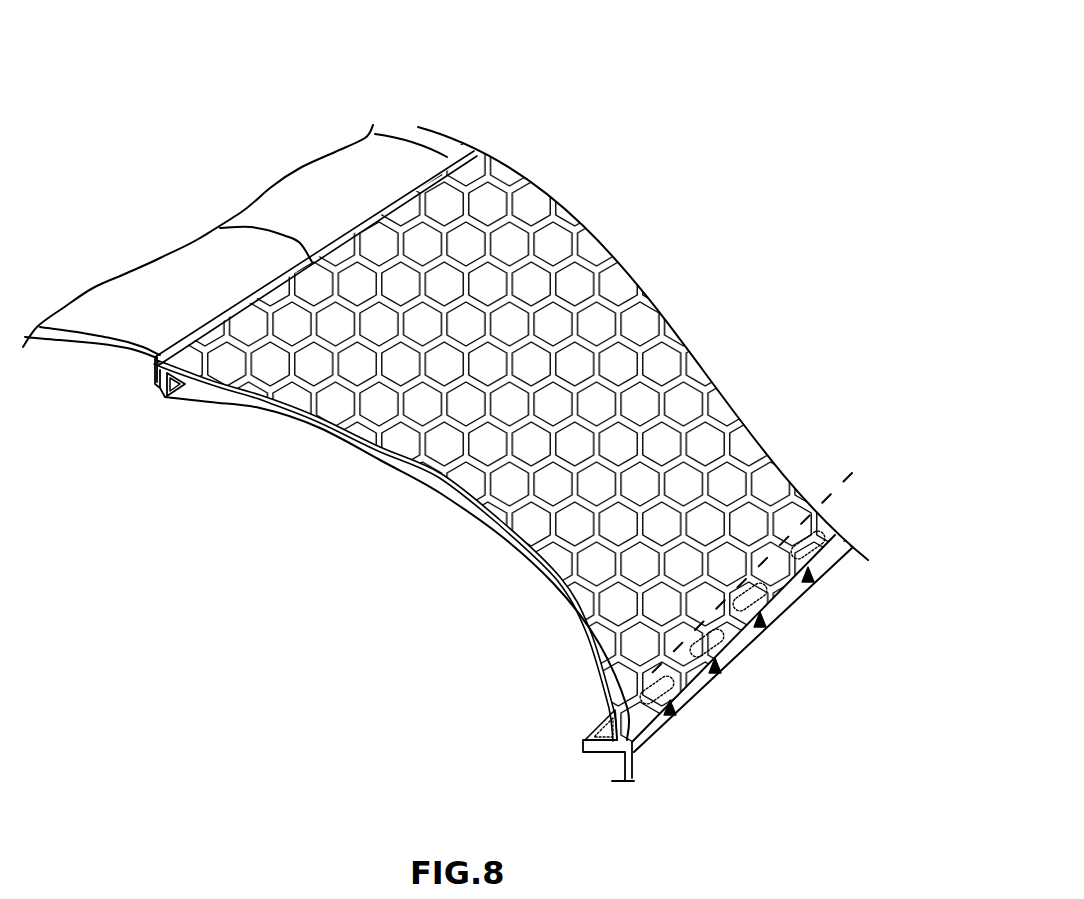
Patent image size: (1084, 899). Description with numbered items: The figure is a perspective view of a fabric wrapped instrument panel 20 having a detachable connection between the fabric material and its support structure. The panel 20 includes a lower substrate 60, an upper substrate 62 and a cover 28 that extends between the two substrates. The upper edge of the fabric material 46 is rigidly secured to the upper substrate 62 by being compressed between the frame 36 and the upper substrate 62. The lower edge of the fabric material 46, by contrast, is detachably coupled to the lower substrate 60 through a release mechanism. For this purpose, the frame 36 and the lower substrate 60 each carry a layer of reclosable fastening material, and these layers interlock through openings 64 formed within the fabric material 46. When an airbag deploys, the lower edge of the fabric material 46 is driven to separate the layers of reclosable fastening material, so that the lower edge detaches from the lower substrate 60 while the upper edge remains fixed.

The fabric wrapped instrument panel 20 is at (632, 110).
The cover 28 is at (643, 242).
The fabric material 46 is at (717, 478).
The upper substrate 62 is at (325, 193).
The frame 36 is at (182, 388).
The lower substrate 60 is at (637, 778).
The openings 64 is at (808, 582).